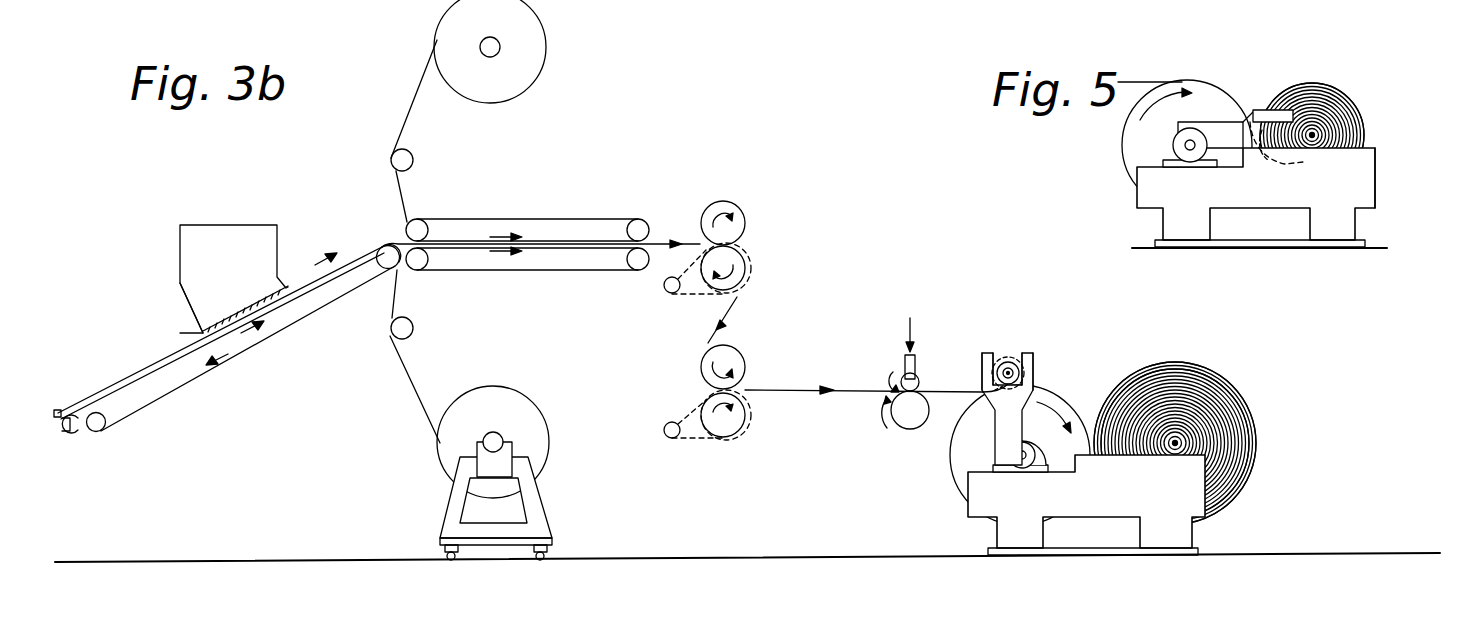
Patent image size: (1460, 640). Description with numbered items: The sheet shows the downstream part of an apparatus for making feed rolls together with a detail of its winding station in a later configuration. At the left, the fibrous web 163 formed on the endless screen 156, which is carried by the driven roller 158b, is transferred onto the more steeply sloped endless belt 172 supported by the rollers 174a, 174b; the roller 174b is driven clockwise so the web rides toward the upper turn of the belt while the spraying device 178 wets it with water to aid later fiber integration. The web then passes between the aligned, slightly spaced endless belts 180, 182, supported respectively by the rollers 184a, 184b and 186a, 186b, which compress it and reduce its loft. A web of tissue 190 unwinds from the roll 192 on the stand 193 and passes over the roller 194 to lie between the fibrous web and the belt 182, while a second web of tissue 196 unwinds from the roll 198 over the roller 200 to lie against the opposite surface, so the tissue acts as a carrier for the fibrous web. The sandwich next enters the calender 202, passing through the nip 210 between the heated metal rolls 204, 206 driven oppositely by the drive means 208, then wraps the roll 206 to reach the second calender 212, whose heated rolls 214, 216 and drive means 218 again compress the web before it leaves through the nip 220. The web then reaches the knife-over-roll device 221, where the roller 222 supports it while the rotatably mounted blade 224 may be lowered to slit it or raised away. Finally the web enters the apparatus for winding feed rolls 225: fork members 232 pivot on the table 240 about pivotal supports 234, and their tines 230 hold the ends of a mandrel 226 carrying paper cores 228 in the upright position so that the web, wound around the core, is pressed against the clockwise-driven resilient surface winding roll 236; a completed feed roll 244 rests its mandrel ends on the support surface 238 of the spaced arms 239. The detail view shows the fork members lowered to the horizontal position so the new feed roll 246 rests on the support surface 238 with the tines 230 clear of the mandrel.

In FIG. 3B, the endless screen 156 is at (58, 411).
In FIG. 3B, the roller 158b is at (82, 433).
In FIG. 3B, the fibrous web 163 is at (140, 378).
In FIG. 3B, the endless belt 172 is at (187, 387).
In FIG. 3B, the roller 174a is at (108, 425).
In FIG. 3B, the roller 174b is at (370, 250).
In FIG. 3B, the spraying device 178 is at (262, 200).
In FIG. 3B, the endless belt 180 is at (505, 218).
In FIG. 3B, the endless belt 182 is at (552, 270).
In FIG. 3B, the roller 184a is at (411, 219).
In FIG. 3B, the roller 184b is at (640, 220).
In FIG. 3B, the roller 186a is at (423, 270).
In FIG. 3B, the roller 186b is at (638, 270).
In FIG. 3B, the web of tissue 190 is at (412, 378).
In FIG. 3B, the roll 192 is at (500, 388).
In FIG. 3B, the stand 193 is at (540, 503).
In FIG. 3B, the roller 194 is at (415, 328).
In FIG. 3B, the second web of tissue 196 is at (417, 86).
In FIG. 3B, the roll 198 is at (533, 82).
In FIG. 3B, the roller 200 is at (411, 158).
In FIG. 3B, the calender 202 is at (760, 224).
In FIG. 3B, the metal roll 204 is at (745, 218).
In FIG. 3B, the metal roll 206 is at (735, 275).
In FIG. 3B, the drive means 208 is at (672, 293).
In FIG. 3B, the nip 210 is at (741, 258).
In FIG. 3B, the second calender 212 is at (730, 365).
In FIG. 3B, the roll 214 is at (725, 358).
In FIG. 3B, the roll 216 is at (738, 425).
In FIG. 3B, the drive means 218 is at (672, 438).
In FIG. 3B, the nip 220 is at (740, 390).
In FIG. 3B, the knife-over-roll device 221 is at (899, 372).
In FIG. 3B, the roller 222 is at (910, 430).
In FIG. 3B, the rotatably mounted blade 224 is at (916, 372).
In FIG. 3B, the apparatus for winding feed rolls 225 is at (968, 506).
In FIG. 5, the apparatus for winding feed rolls 225 is at (1137, 197).
In FIG. 3B, the mandrel 226 is at (1011, 368).
In FIG. 5, the mandrel 226 is at (1315, 133).
In FIG. 3B, the paper core 228 is at (1024, 378).
In FIG. 5, the paper core 228 is at (1314, 130).
In FIG. 3B, the tines 230 is at (986, 352).
In FIG. 5, the tines 230 is at (1268, 94).
In FIG. 3B, the fork member 232 is at (993, 414).
In FIG. 5, the fork member 232 is at (1238, 120).
In FIG. 3B, the pivotal support 234 is at (1019, 466).
In FIG. 5, the pivotal support 234 is at (1188, 150).
In FIG. 3B, the resilient surface winding roll 236 is at (1090, 394).
In FIG. 5, the resilient surface winding roll 236 is at (1205, 90).
In FIG. 3B, the support surface 238 is at (1210, 440).
In FIG. 5, the support surface 238 is at (1364, 146).
In FIG. 3B, the spaced arms 239 is at (1165, 495).
In FIG. 5, the spaced arms 239 is at (1348, 199).
In FIG. 3B, the table 240 is at (1210, 470).
In FIG. 5, the table 240 is at (1376, 172).
In FIG. 3B, the completed feed roll 244 is at (1214, 372).
In FIG. 5, the new feed roll 246 is at (1328, 88).